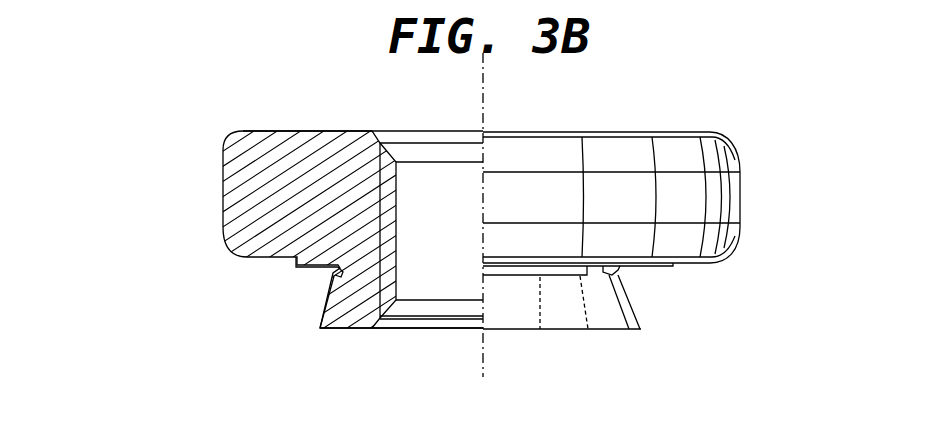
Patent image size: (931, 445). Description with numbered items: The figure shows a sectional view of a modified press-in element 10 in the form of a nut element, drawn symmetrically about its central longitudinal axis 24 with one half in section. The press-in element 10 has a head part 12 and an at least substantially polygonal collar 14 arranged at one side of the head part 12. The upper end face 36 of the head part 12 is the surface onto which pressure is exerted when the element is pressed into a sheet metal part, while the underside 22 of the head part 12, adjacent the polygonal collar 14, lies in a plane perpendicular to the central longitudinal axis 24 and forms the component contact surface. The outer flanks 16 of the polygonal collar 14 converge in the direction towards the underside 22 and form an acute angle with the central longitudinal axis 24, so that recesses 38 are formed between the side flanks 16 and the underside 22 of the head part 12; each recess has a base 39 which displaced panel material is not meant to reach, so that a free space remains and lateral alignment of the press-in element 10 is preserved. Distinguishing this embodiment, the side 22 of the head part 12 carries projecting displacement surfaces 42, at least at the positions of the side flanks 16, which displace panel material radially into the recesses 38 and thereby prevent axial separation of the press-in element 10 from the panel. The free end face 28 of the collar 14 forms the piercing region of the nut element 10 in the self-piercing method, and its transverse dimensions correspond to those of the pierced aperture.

The press-in element 10 is at (755, 133).
The head part 12 is at (224, 195).
The polygonal collar 14 is at (627, 278).
The outer flanks 16 is at (342, 283).
The underside of the head part 22 is at (670, 263).
The central longitudinal axis 24 is at (483, 117).
The free end face of the collar 28 is at (552, 330).
The upper end face of the head part 36 is at (315, 128).
The recesses 38 is at (337, 275).
The base of the recesses 39 is at (337, 282).
The displacement surfaces 42 is at (337, 270).